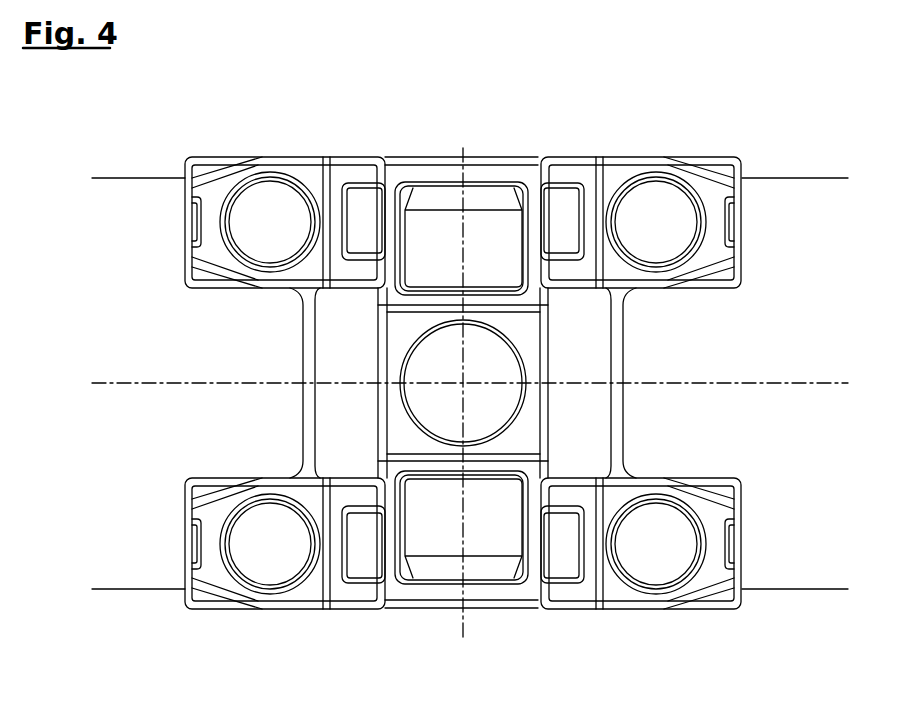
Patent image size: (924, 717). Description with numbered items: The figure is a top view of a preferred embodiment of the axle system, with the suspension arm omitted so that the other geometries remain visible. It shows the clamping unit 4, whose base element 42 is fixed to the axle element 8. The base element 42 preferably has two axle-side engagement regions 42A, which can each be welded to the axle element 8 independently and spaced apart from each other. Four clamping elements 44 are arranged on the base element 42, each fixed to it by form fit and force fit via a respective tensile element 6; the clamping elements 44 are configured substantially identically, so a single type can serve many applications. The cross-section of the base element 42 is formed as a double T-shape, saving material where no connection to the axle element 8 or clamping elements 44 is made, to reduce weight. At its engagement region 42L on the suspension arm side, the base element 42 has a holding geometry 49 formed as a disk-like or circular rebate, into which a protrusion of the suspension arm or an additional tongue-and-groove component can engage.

The clamping unit 4 is at (745, 623).
The tensile element 6 is at (673, 210).
The axle element 8 is at (782, 180).
The base element 42 is at (597, 345).
The axle-side engagement region 42A is at (497, 272).
The engagement region on the suspension arm side 42L is at (403, 328).
The clamping element 44 is at (313, 180).
The holding geometry 49 is at (523, 405).